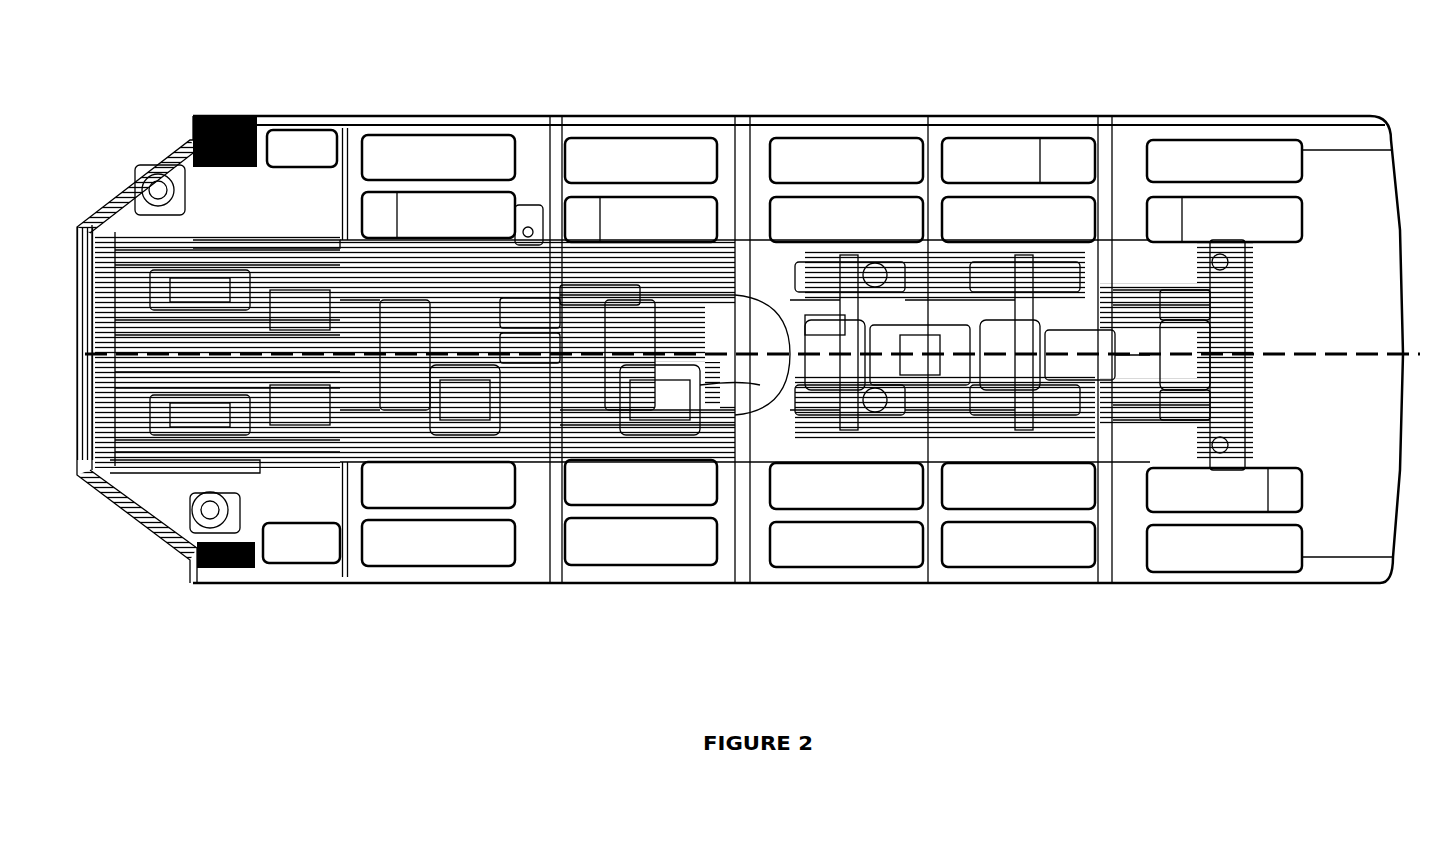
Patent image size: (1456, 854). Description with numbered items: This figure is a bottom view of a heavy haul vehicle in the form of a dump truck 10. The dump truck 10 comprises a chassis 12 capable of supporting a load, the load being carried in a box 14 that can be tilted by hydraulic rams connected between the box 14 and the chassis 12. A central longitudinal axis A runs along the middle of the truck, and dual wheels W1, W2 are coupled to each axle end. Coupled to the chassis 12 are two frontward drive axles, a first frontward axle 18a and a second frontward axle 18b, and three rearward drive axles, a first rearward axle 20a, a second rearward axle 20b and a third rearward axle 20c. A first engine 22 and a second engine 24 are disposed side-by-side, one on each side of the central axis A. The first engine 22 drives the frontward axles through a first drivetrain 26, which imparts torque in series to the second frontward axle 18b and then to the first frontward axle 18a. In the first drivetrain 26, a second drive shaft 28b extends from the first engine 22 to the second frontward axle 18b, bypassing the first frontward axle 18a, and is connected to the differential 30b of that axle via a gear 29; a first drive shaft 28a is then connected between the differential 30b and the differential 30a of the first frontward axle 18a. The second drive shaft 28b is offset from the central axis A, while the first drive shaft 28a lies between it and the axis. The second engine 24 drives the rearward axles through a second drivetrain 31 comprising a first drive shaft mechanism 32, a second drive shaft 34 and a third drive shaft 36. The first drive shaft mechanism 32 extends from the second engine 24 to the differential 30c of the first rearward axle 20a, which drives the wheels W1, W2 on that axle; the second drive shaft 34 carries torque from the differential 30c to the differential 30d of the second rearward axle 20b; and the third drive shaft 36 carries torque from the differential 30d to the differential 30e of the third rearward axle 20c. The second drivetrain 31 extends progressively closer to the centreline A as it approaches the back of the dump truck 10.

The dump truck 10 is at (1232, 90).
The chassis 12 is at (750, 295).
The box 14 is at (1340, 138).
The dual wheel W1 is at (440, 150).
The dual wheel W2 is at (440, 207).
The first frontward axle 18a is at (440, 383).
The second frontward axle 18b is at (645, 383).
The first rearward axle 20a is at (845, 295).
The second rearward axle 20b is at (1020, 295).
The third rearward axle 20c is at (1225, 325).
The first engine 22 is at (195, 280).
The second engine 24 is at (180, 405).
The first drivetrain 26 is at (528, 222).
The first drive shaft 28a is at (523, 345).
The second drive shaft 28b is at (517, 300).
The gear 29 is at (603, 302).
The differential 30a is at (412, 345).
The differential 30b is at (620, 345).
The differential 30c is at (827, 382).
The differential 30d is at (995, 388).
The differential 30e is at (1203, 382).
The second drivetrain 31 is at (935, 470).
The first drive shaft mechanism 32 is at (603, 428).
The second drive shaft 34 is at (920, 385).
The third drive shaft 36 is at (1105, 380).
The central longitudinal axis A is at (764, 356).